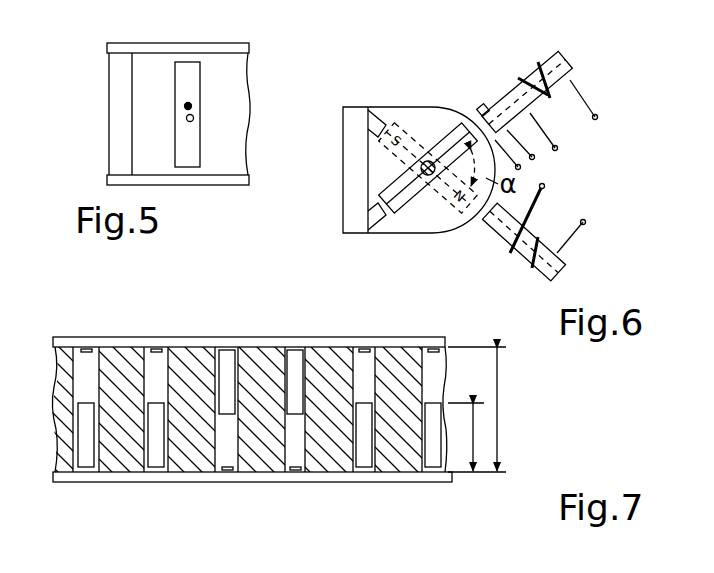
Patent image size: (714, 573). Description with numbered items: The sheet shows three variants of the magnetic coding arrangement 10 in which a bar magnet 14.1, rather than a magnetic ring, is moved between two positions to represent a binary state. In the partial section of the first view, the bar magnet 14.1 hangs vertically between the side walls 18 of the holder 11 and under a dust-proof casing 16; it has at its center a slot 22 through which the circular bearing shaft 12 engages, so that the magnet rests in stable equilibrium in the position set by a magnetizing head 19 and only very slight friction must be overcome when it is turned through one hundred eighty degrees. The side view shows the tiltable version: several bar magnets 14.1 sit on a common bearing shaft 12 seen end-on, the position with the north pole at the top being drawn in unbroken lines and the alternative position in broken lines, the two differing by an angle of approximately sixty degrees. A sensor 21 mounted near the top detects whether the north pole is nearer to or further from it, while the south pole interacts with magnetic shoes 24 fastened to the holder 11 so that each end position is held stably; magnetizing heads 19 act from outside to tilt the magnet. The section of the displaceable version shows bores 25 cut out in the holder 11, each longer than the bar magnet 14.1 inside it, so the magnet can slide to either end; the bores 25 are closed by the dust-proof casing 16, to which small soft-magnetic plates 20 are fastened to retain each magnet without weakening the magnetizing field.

In FIG. 7, the magnetic coding arrangement 10 is at (290, 399).
In FIG. 6, the holder 11 is at (352, 180).
In FIG. 7, the holder 11 is at (335, 463).
In FIG. 5, the bearing shaft 12 is at (192, 106).
In FIG. 6, the bearing shaft 12 is at (428, 177).
In FIG. 5, the bar magnet 14.1 is at (200, 72).
In FIG. 6, the bar magnet 14.1 is at (448, 130).
In FIG. 7, the bar magnet 14.1 is at (157, 472).
In FIG. 5, the dust-proof casing 16 is at (171, 45).
In FIG. 6, the dust-proof casing 16 is at (463, 223).
In FIG. 7, the dust-proof casing 16 is at (128, 340).
In FIG. 5, the side wall 18 is at (113, 134).
In FIG. 6, the magnetizing head 19 is at (570, 64).
In FIG. 7, the soft-magnetic plate 20 is at (89, 472).
In FIG. 6, the sensor 21 is at (484, 102).
In FIG. 5, the slot 22 is at (193, 120).
In FIG. 6, the magnetic shoe 24 is at (368, 107).
In FIG. 7, the bore 25 is at (360, 373).